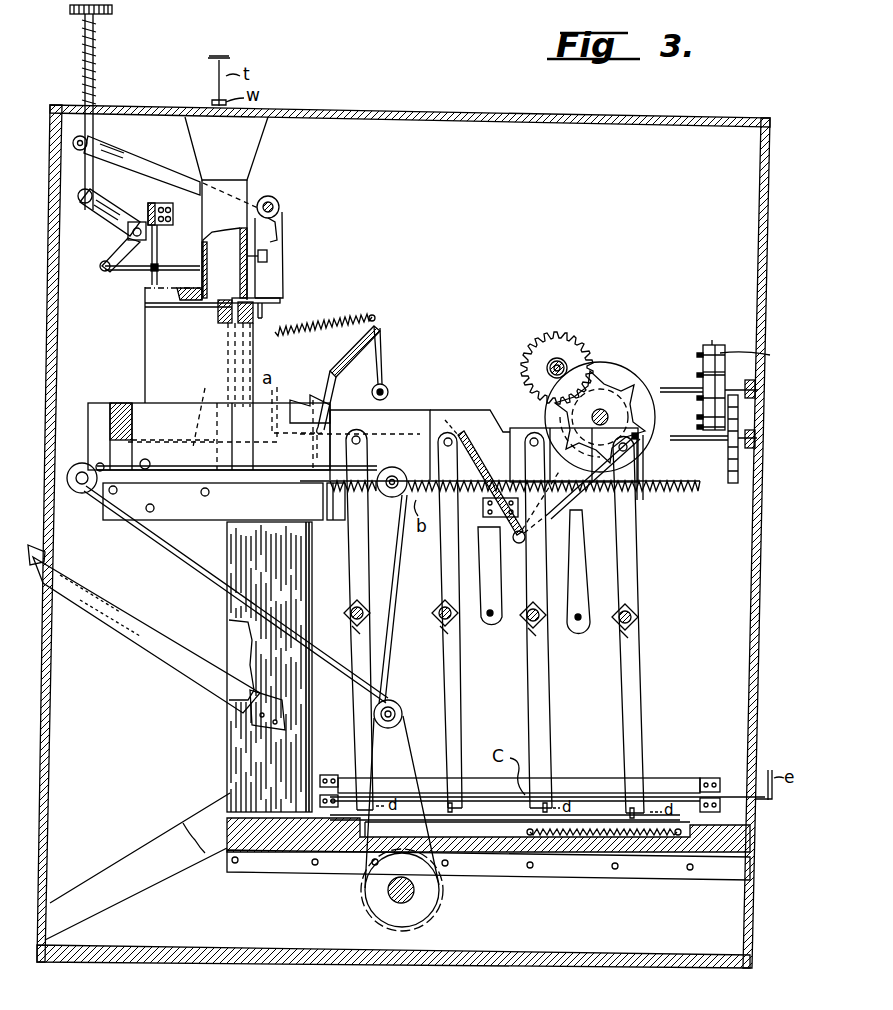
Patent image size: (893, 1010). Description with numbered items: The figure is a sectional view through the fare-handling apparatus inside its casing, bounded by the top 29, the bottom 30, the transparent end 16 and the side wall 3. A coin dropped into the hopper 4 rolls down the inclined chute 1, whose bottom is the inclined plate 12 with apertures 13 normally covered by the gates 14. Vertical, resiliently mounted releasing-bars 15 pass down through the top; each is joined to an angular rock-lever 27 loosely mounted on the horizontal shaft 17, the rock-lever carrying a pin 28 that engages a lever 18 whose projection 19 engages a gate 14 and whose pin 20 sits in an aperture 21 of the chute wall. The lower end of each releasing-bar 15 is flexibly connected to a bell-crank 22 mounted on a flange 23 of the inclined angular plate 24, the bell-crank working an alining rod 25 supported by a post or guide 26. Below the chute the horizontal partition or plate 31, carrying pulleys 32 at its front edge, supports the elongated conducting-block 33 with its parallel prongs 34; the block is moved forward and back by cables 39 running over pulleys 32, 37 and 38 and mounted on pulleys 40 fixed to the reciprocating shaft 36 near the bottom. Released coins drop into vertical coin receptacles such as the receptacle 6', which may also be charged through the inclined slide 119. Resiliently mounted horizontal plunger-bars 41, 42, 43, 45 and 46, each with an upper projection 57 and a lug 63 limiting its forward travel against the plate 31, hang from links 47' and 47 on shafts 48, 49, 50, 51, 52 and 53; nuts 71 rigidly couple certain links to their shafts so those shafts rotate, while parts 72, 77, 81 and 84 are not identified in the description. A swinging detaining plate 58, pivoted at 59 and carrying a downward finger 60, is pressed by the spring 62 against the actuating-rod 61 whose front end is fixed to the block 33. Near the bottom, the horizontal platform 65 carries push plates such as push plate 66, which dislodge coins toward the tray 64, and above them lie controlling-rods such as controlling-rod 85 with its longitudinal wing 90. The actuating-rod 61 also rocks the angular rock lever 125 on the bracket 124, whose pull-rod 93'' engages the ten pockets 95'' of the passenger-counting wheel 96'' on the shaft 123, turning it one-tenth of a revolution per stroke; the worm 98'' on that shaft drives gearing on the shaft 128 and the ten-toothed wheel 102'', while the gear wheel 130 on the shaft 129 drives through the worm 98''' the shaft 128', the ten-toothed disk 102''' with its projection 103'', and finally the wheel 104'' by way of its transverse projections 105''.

The coin chute 1 is at (208, 208).
The side wall of the casing 3 is at (403, 544).
The hopper 4 is at (258, 128).
The coin receptacle 6' is at (249, 667).
The inclined plate 12 is at (145, 300).
The apertures 13 is at (222, 312).
The detaining plates or gates 14 is at (285, 300).
The releasing-bars 15 is at (97, 118).
The end of the casing 16 is at (58, 355).
The horizontal shaft 17 is at (279, 204).
The levers 18 is at (290, 273).
The projection 19 is at (264, 314).
The horizontal pin 20 is at (255, 256).
The aperture 21 is at (240, 262).
The bell-cranks 22 is at (120, 246).
The flange 23 is at (134, 222).
The inclined angular plate 24 is at (160, 203).
The alining rod 25 is at (128, 274).
The post or guide 26 is at (158, 264).
The rock-levers 27 is at (178, 172).
The pin 28 is at (285, 240).
The top of the casing 29 is at (507, 117).
The bottom of the casing 30 is at (330, 966).
The horizontal partition or plate 31 is at (184, 504).
The pulleys 32 is at (80, 495).
The conducting-block 33 is at (122, 405).
The prongs 34 is at (173, 432).
The shaft 36 is at (410, 898).
The pulleys 37 is at (404, 706).
The pulleys 38 is at (392, 499).
The cables 39 is at (198, 572).
The pulleys 40 is at (375, 898).
The plunger-bar 41 is at (430, 410).
The plunger-bar 42 is at (472, 410).
The plunger-bar 43 is at (514, 428).
The plunger-bar 45 is at (588, 488).
The plunger-bar 46 is at (643, 470).
The links 47 is at (541, 536).
The link 47' is at (345, 535).
The shaft 48 is at (345, 613).
The shaft 49 is at (433, 613).
The shaft 50 is at (489, 622).
The shaft 51 is at (528, 626).
The shaft 52 is at (577, 626).
The shaft 53 is at (639, 615).
The projection 57 is at (297, 398).
The detaining plate 58 is at (352, 360).
The pivot 59 is at (384, 385).
The finger 60 is at (330, 400).
The actuating-rod 61 is at (206, 390).
The spring 62 is at (352, 314).
The lug 63 is at (332, 522).
The slide or tray 64 is at (163, 878).
The horizontal platform 65 is at (290, 855).
The push plate 66 is at (506, 826).
The nuts 71 is at (352, 626).
The arm 72 is at (358, 704).
The arm 77 is at (455, 710).
The arm 81 is at (550, 712).
The arm 84 is at (642, 712).
The controlling-rod 85 is at (722, 795).
The longitudinal wing 90 is at (607, 778).
The pull-rod 93'' is at (508, 486).
The pockets 95'' is at (613, 404).
The wheel 96'' is at (600, 401).
The worm 98'' is at (612, 414).
The worm 98''' is at (609, 334).
The wheel 102'' is at (719, 439).
The disk 102''' is at (687, 370).
The projection 103'' is at (733, 314).
The wheel 104'' is at (767, 355).
The transverse projections 105'' is at (725, 376).
The slides 119 is at (148, 646).
The shaft 123 is at (594, 423).
The bracket 124 is at (486, 515).
The angular rock lever 125 is at (529, 517).
The shaft 128 is at (709, 449).
The shaft 128' is at (709, 399).
The shaft 129 is at (553, 360).
The gear wheel 130 is at (566, 360).